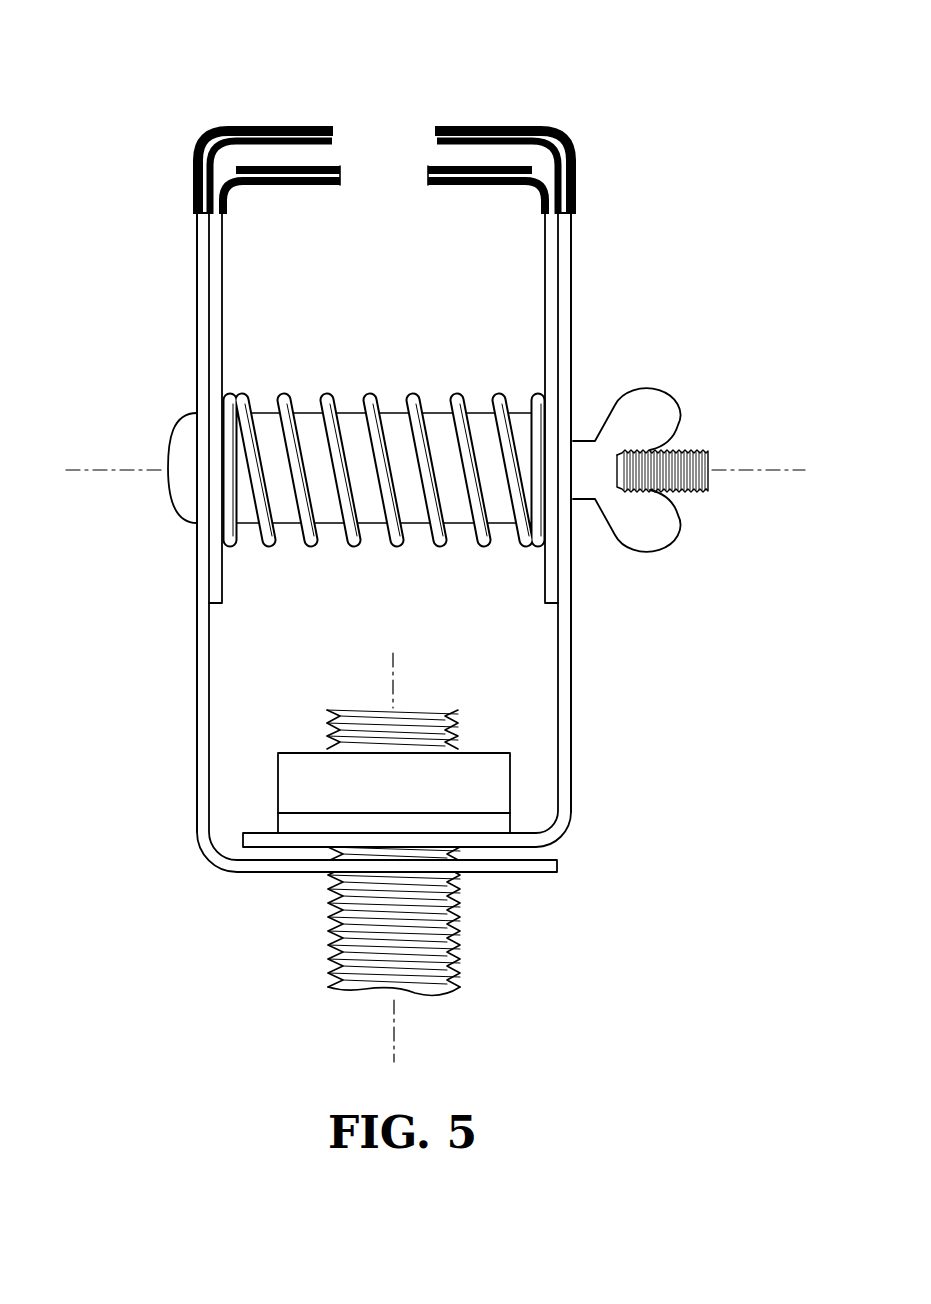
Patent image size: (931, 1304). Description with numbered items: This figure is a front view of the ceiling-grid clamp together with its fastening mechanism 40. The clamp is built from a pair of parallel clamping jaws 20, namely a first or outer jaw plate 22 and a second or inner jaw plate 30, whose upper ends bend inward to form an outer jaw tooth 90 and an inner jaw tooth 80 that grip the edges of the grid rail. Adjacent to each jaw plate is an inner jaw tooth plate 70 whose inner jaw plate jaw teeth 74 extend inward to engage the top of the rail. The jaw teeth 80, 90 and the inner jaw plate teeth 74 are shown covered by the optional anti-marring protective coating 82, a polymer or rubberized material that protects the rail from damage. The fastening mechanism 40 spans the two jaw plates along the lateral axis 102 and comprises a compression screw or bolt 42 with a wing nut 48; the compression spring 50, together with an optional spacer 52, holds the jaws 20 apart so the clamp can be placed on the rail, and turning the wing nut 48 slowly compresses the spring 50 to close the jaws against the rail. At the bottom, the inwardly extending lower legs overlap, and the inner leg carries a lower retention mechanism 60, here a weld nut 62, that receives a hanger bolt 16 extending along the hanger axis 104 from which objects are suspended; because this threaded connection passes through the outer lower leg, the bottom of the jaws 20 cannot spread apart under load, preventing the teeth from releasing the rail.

The hanger bolt 16 is at (458, 940).
The parallel clamping jaws 20 is at (566, 636).
The first jaw plate 22 is at (196, 262).
The second jaw plate 30 is at (572, 259).
The fastening mechanism 40 is at (184, 530).
The compression screw or bolt 42 is at (168, 490).
The wing nut 48 is at (678, 415).
The compression spring 50 is at (498, 396).
The spacer 52 is at (482, 428).
The lower retention mechanism 60 is at (320, 789).
The weld nut 62 is at (418, 773).
The inner jaw tooth plate 70 is at (545, 325).
The inner jaw plate jaw teeth 74 is at (276, 179).
The inner jaw tooth 80 is at (535, 123).
The protective coating 82 is at (438, 123).
The outer jaw tooth 90 is at (236, 123).
The lateral axis 102 is at (735, 470).
The hanger axis 104 is at (395, 1018).